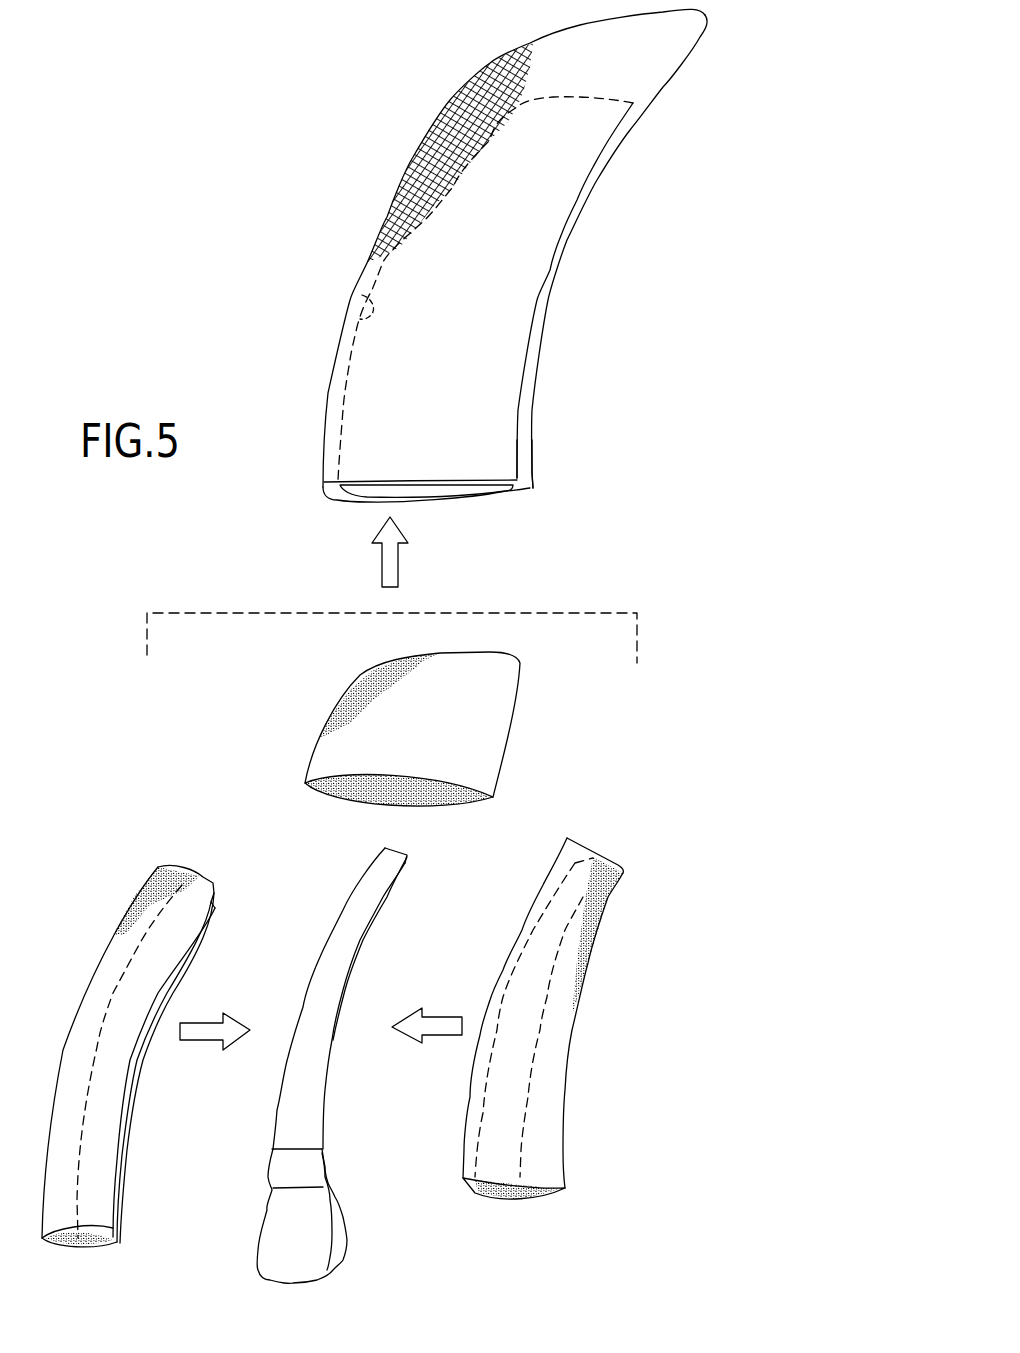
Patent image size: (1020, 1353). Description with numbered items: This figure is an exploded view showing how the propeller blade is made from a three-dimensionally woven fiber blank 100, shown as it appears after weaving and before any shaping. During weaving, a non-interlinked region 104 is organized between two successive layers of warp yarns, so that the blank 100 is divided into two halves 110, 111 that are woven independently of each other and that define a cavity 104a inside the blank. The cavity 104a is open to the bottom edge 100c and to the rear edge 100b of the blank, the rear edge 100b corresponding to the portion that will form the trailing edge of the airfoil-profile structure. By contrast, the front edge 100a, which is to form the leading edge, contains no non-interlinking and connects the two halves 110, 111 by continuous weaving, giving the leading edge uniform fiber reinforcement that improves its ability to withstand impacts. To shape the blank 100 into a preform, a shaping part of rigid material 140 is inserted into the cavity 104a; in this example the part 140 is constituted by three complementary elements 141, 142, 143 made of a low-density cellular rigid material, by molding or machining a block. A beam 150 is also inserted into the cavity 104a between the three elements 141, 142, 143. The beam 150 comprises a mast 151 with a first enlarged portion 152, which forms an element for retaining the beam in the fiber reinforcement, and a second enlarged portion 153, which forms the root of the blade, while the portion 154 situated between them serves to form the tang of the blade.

The fiber blank 100 is at (486, 277).
The front edge 100a is at (332, 380).
The rear edge 100b is at (537, 363).
The bottom edge 100c is at (333, 502).
The non-interlinked region 104 is at (356, 291).
The cavity 104a is at (412, 490).
The first half 110 is at (520, 273).
The second half 111 is at (523, 443).
The shaping part of rigid material 140 is at (371, 949).
The complementary element 141 is at (480, 727).
The complementary element 142 is at (203, 877).
The complementary element 143 is at (548, 1000).
The beam 150 is at (335, 1065).
The mast 151 is at (343, 929).
The first enlarged portion 152 is at (322, 1158).
The second enlarged portion 153 is at (340, 1242).
The portion between the enlarged portions 154 is at (327, 1183).